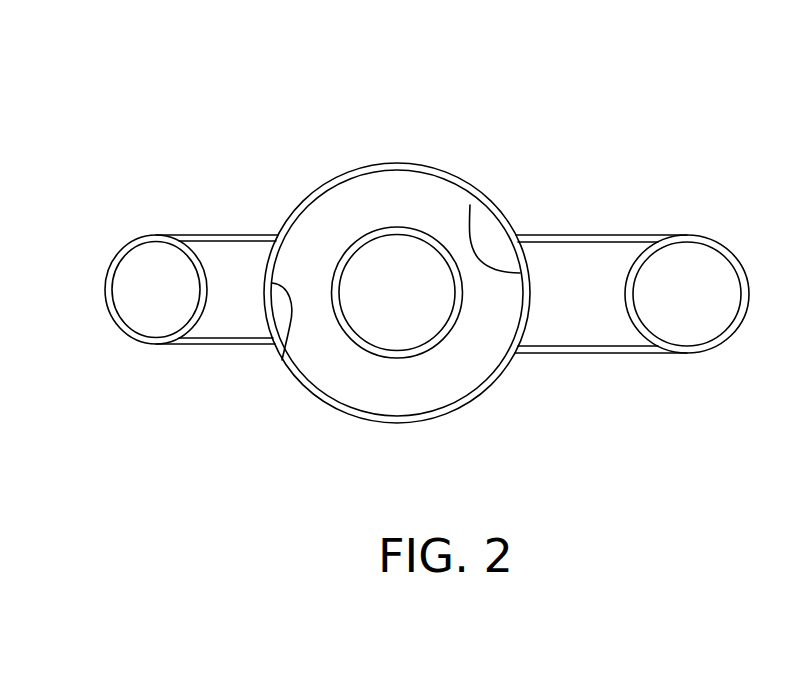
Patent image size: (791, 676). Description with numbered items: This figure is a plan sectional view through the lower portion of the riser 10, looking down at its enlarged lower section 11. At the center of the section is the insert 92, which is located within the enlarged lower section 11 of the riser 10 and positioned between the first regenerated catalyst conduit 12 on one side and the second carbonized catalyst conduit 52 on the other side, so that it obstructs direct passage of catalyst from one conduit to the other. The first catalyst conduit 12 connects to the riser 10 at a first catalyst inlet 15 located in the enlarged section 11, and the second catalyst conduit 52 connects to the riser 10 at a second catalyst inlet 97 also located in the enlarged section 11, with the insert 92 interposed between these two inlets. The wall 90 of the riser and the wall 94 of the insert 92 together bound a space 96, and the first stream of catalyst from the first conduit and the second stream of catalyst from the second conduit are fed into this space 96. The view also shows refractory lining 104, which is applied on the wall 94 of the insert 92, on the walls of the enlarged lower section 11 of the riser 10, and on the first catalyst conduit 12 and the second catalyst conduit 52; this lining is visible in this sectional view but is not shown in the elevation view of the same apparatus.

The riser 10 is at (376, 82).
The enlarged lower section 11 is at (347, 183).
The first regenerated catalyst conduit 12 is at (207, 343).
The first catalyst inlet 15 is at (347, 327).
The second carbonized catalyst conduit 52 is at (625, 240).
The wall of the riser 90 is at (375, 422).
The insert 92 is at (472, 350).
The wall of the insert 94 is at (282, 360).
The space 96 is at (317, 253).
The second catalyst inlet 97 is at (470, 205).
The refractory lining 104 is at (422, 168).